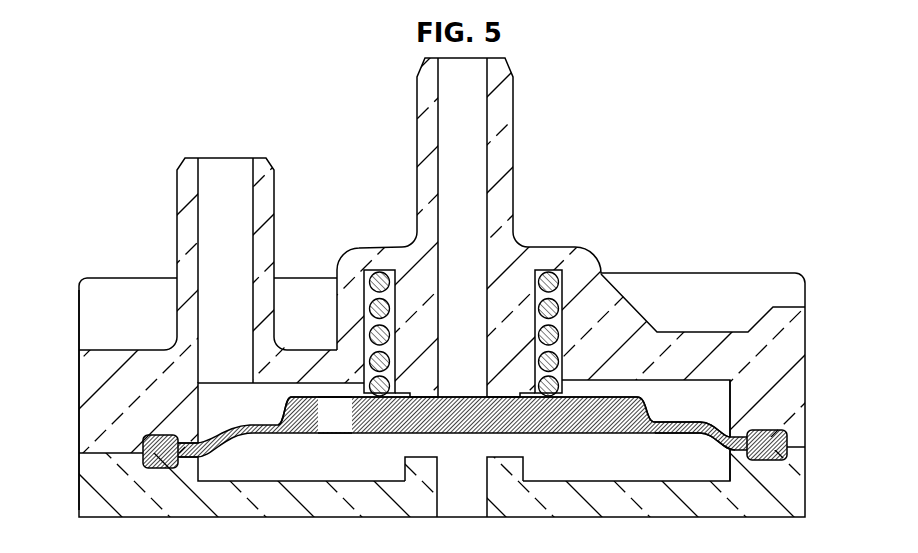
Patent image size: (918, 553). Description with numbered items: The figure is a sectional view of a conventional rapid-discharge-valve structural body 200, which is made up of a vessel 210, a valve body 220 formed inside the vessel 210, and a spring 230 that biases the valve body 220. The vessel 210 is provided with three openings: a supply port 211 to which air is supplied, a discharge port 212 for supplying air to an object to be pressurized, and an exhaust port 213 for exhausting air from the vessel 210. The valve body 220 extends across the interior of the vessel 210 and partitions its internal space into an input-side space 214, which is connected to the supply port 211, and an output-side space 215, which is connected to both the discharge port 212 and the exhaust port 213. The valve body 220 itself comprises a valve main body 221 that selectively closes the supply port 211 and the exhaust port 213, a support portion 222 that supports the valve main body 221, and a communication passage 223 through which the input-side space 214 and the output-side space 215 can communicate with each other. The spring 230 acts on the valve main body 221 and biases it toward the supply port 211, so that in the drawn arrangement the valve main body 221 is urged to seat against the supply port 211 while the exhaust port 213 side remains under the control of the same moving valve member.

The rapid-discharge-valve structural body 200 is at (745, 222).
The vessel 210 is at (79, 452).
The supply port 211 is at (468, 457).
The discharge port 212 is at (225, 385).
The exhaust port 213 is at (463, 390).
The input-side space 214 is at (720, 465).
The output-side space 215 is at (720, 405).
The valve body 220 is at (667, 422).
The valve main body 221 is at (574, 433).
The support portion 222 is at (700, 437).
The communication passage 223 is at (335, 435).
The spring 230 is at (366, 270).